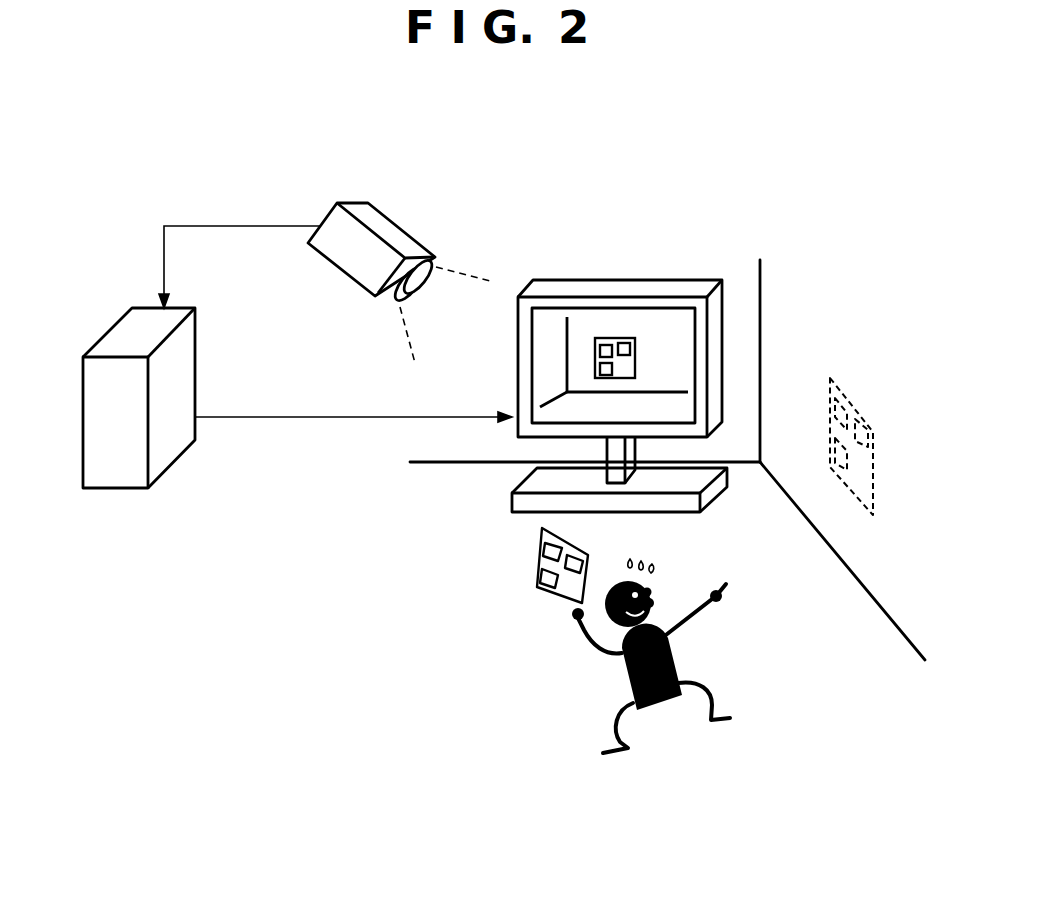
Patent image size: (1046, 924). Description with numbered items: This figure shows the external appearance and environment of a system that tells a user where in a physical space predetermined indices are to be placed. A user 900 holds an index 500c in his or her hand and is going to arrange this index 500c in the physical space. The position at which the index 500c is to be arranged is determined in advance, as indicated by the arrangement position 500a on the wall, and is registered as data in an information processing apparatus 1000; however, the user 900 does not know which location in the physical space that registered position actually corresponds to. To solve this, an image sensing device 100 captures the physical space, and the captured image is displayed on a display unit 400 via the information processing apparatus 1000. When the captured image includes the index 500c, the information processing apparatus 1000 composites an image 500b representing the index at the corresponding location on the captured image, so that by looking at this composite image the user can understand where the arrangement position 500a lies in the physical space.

The image sensing device 100 is at (398, 225).
The information processing apparatus 1000 is at (196, 355).
The display unit 400 is at (690, 280).
The arrangement position of the index 500a is at (840, 388).
The image representing the index 500b is at (612, 338).
The index 500c is at (540, 562).
The user 900 is at (678, 660).